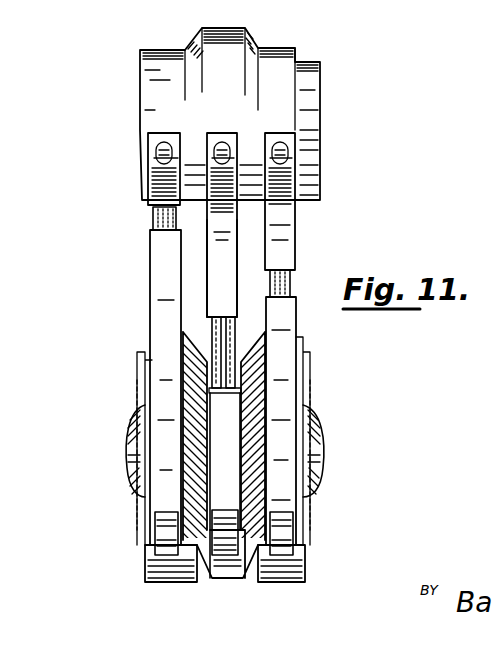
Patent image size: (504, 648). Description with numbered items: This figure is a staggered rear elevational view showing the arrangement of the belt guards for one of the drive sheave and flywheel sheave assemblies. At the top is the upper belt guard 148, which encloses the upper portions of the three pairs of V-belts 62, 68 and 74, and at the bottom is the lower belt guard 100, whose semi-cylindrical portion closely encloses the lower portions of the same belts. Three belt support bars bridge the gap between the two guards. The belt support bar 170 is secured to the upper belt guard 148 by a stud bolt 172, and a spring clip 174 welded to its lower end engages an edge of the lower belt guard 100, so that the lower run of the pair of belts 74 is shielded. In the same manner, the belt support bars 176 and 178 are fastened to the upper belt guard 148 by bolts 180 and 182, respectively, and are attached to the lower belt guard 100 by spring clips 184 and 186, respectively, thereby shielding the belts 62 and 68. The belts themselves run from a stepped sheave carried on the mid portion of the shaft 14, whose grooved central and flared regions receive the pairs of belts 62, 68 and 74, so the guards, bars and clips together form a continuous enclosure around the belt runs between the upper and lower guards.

The upper belt guard 148 is at (284, 56).
The bolt 180 is at (221, 146).
The bolt 182 is at (164, 156).
The stud bolt 172 is at (286, 158).
The second pair of V-belts 68 is at (156, 221).
The belt support bar 178 is at (158, 253).
The belt support bar 176 is at (221, 289).
The belt support bar 170 is at (286, 226).
The third pair of V-belts 74 is at (290, 288).
The pair of V-belts 62 is at (231, 336).
The shaft 14 is at (312, 442).
The spring clip 184 is at (224, 520).
The spring clip 186 is at (162, 530).
The spring clip 174 is at (290, 522).
The lower belt guard 100 is at (273, 574).